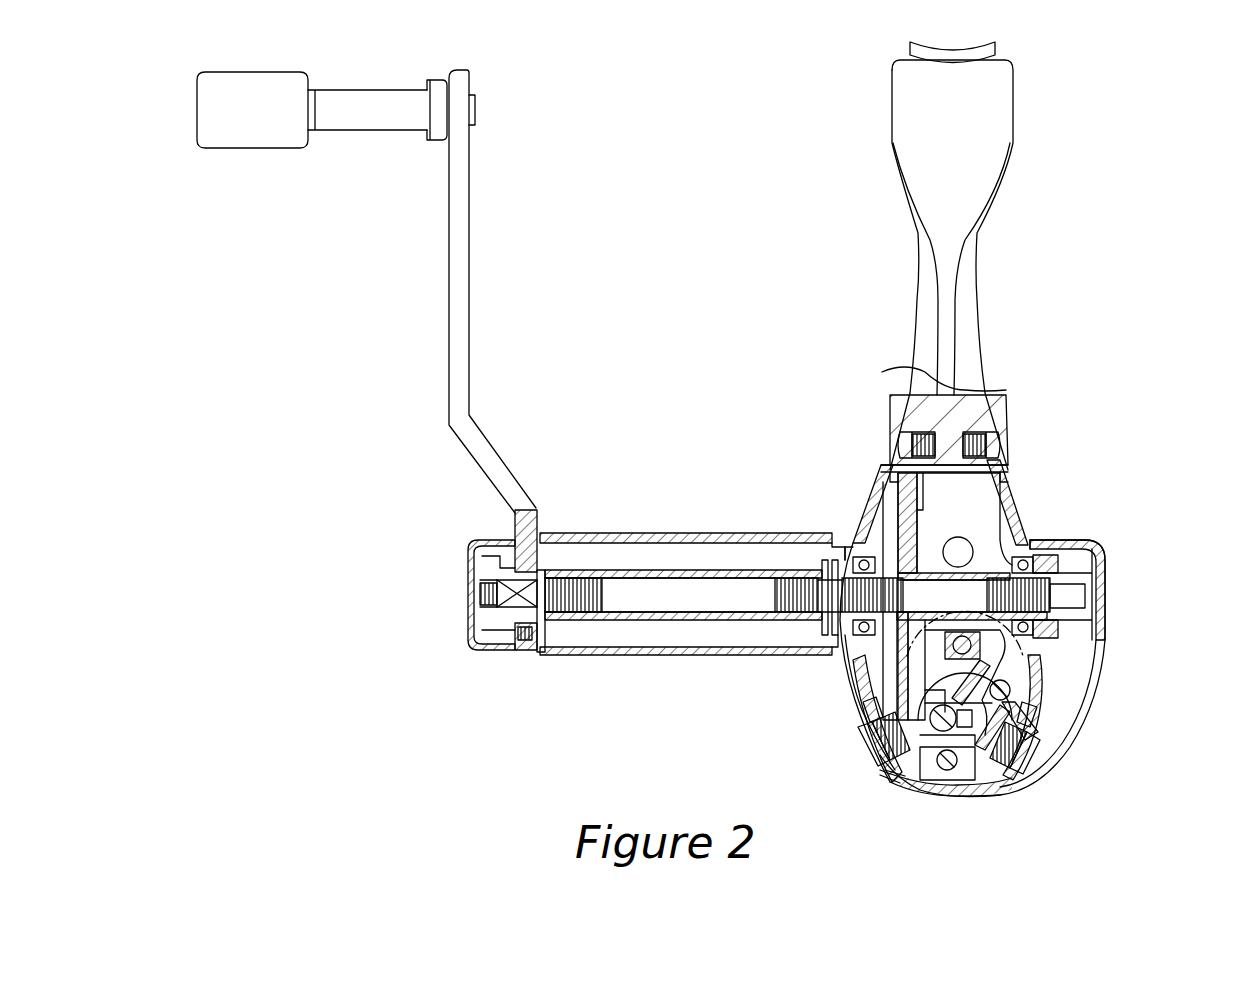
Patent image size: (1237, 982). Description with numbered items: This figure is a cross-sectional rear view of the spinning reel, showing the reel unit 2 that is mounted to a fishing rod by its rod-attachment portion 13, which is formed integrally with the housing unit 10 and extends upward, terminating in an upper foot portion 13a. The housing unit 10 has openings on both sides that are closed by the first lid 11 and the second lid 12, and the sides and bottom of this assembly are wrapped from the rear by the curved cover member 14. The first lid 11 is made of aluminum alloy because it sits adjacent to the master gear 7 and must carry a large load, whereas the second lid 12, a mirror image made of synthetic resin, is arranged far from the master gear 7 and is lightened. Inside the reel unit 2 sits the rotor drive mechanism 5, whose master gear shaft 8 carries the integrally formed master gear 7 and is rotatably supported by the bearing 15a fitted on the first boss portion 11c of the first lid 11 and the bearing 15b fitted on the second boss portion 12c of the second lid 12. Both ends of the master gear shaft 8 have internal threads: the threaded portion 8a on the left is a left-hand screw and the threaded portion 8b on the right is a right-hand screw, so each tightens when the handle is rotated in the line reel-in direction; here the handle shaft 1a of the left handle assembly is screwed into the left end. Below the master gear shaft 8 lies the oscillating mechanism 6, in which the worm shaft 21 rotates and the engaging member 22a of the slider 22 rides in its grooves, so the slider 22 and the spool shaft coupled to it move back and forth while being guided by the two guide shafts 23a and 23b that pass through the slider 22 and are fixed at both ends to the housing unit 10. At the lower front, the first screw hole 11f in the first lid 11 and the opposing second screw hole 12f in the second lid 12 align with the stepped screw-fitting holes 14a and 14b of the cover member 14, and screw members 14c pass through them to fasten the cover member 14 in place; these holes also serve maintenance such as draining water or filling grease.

The handle shaft 1a is at (647, 572).
The reel unit 2 is at (992, 352).
The rotor drive mechanism 5 is at (870, 488).
The oscillating mechanism 6 is at (1040, 710).
The master gear 7 is at (875, 465).
The master gear shaft 8 is at (1000, 535).
The threaded portion 8a is at (822, 657).
The threaded portion 8b is at (1030, 600).
The housing unit 10 is at (887, 790).
The first lid 11 is at (885, 498).
The first boss portion 11c is at (860, 530).
The first screw hole 11f is at (825, 703).
The second lid 12 is at (1000, 480).
The second boss portion 12c is at (1040, 545).
The second screw hole 12f is at (990, 800).
The rod-attachment portion 13 is at (958, 298).
The rod attachment portion 13a is at (988, 40).
The cover member 14 is at (1077, 730).
The screw-fitting hole 14a is at (865, 765).
The screw-fitting hole 14b is at (1010, 775).
The screw member 14c is at (870, 752).
The bearing 15a is at (850, 527).
The bearing 15b is at (1092, 558).
The worm shaft 21 is at (870, 690).
The slider 22 is at (1060, 725).
The engaging member 22a is at (880, 690).
The guide shaft 23a is at (1040, 672).
The guide shaft 23b is at (970, 795).